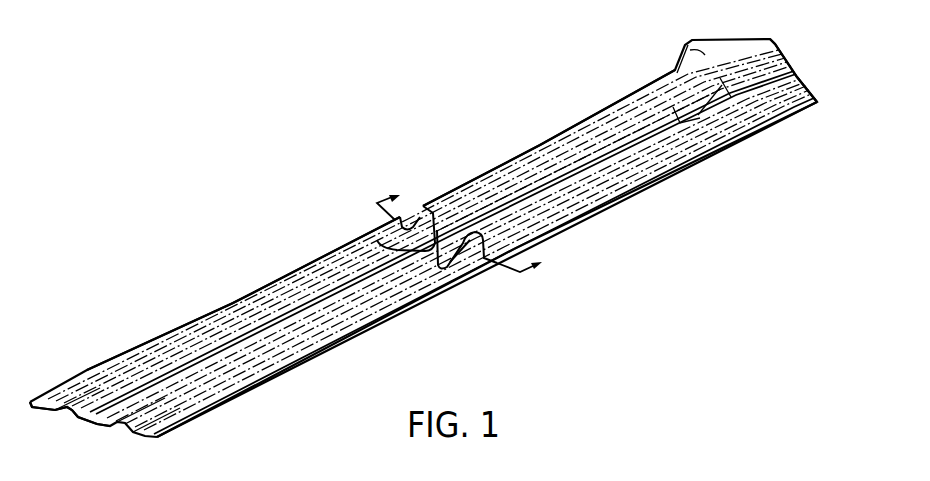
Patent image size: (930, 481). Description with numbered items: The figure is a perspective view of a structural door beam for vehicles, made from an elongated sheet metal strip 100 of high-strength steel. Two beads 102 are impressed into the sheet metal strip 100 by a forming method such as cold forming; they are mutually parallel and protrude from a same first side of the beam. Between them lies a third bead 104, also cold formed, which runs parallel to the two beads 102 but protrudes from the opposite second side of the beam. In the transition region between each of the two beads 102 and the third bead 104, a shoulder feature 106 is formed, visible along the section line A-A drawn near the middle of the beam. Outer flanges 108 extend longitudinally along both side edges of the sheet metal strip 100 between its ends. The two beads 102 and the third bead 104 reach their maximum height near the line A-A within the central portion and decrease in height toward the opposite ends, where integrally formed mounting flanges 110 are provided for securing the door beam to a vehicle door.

The sheet metal strip 100 is at (293, 147).
The two beads 102 is at (233, 310).
The third bead 104 is at (513, 200).
The shoulder feature 106 is at (377, 240).
The outer flanges 108 is at (583, 122).
The integrally formed mounting flanges 110 is at (72, 343).